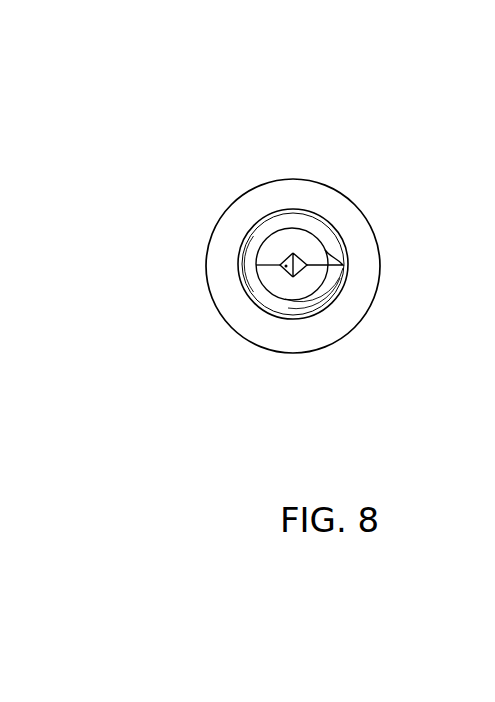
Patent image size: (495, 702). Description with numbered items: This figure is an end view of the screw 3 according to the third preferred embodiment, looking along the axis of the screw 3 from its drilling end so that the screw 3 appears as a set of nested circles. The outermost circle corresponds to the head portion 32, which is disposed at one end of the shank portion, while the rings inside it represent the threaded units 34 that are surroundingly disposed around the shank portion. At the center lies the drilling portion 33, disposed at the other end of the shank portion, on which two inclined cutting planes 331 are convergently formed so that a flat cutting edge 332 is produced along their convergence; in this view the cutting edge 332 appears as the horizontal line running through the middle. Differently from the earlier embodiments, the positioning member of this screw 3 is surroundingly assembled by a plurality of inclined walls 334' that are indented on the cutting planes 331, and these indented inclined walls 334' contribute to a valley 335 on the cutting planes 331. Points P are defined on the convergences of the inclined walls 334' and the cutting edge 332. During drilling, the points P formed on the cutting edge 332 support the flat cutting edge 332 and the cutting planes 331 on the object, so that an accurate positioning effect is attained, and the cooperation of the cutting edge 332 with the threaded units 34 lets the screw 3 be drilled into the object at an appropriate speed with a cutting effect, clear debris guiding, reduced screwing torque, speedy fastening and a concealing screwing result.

The screw 3 is at (185, 142).
The head portion 32 is at (293, 178).
The drilling portion 33 is at (330, 245).
The threaded units 34 is at (265, 295).
The cutting planes 331 is at (287, 282).
The cutting edge 332 is at (304, 265).
The inclined walls 334' is at (207, 295).
The valley 335 is at (295, 272).
The points P is at (283, 262).